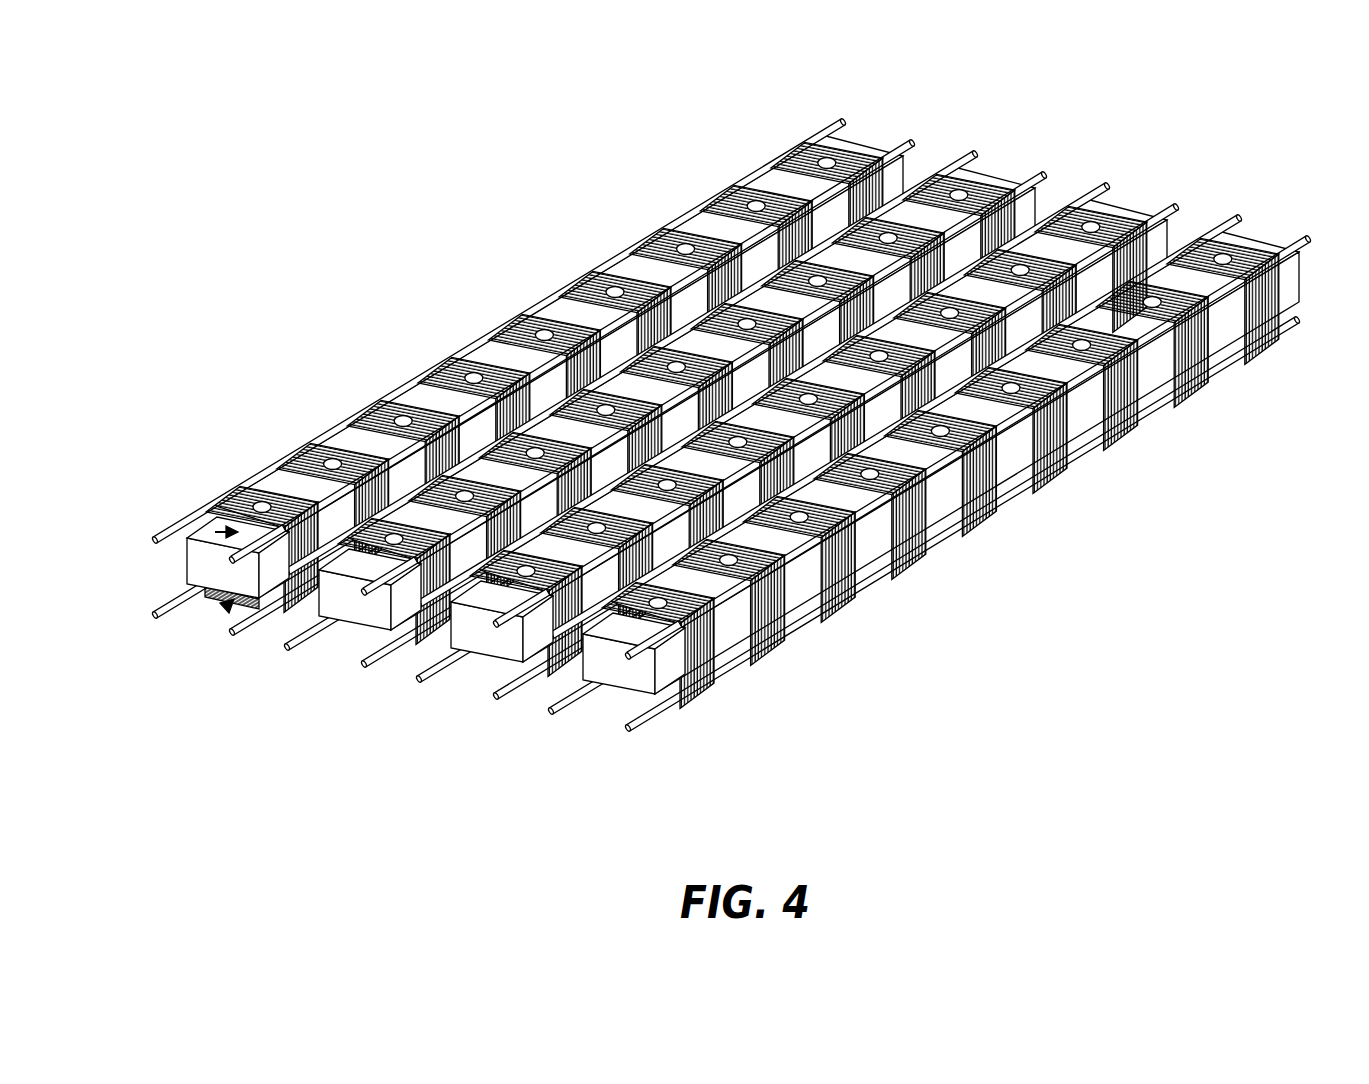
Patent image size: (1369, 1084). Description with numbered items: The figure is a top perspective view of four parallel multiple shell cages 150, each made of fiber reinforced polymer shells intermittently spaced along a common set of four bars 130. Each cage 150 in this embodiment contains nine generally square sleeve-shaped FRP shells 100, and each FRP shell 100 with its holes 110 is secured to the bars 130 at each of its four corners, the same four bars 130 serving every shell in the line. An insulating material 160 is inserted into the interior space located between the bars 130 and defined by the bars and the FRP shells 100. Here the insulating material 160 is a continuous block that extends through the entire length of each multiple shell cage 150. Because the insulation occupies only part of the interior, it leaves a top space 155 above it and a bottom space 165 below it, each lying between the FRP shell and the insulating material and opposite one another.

The FRP shell 100 is at (980, 513).
The holes 110 is at (1115, 213).
The bars 130 is at (507, 700).
The multiple shell cage 150 is at (727, 173).
The top space 155 is at (193, 517).
The insulating material 160 is at (210, 567).
The bottom space 165 is at (226, 606).